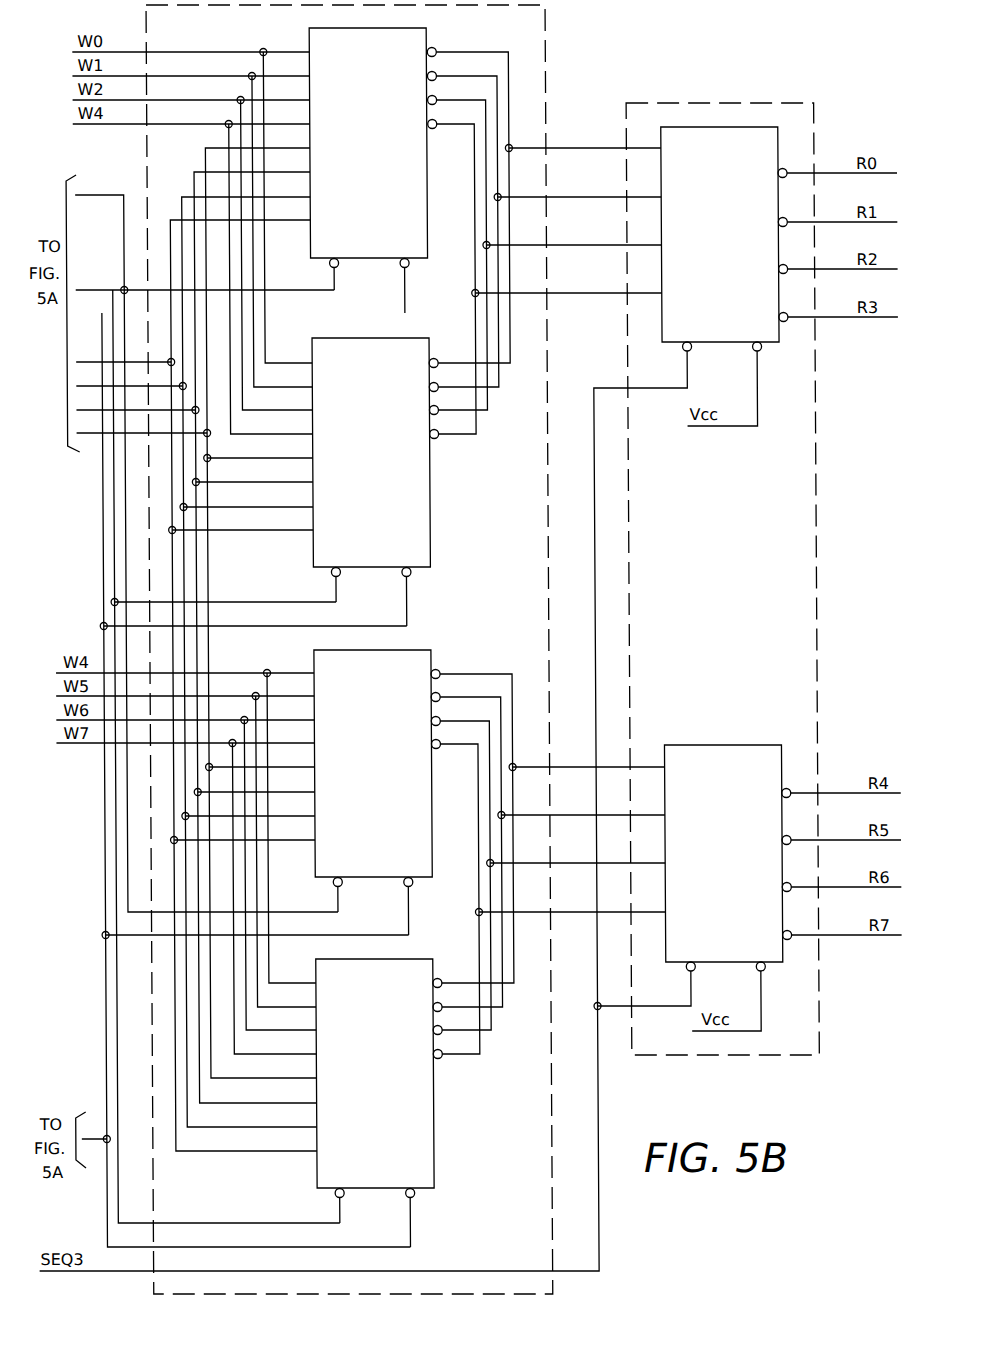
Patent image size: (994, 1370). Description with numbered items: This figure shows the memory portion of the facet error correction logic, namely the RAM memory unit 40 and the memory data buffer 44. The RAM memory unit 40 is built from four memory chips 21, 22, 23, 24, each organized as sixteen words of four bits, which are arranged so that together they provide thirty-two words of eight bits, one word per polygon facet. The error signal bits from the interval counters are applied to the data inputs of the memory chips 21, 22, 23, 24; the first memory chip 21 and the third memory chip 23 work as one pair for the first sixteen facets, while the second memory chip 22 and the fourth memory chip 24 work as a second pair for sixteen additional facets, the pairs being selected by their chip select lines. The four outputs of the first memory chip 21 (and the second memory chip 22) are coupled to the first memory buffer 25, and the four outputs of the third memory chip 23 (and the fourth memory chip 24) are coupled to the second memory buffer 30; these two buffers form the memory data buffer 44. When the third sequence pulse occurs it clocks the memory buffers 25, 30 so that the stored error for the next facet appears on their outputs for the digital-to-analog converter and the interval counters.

The RAM memory unit 40 is at (547, 79).
The memory data buffer 44 is at (710, 103).
The memory chip a21 21 is at (368, 143).
The memory chip a22 22 is at (371, 452).
The memory chip a23 23 is at (373, 763).
The memory chip a24 24 is at (375, 1073).
The memory buffer a25 25 is at (720, 234).
The memory buffer a30 30 is at (723, 853).